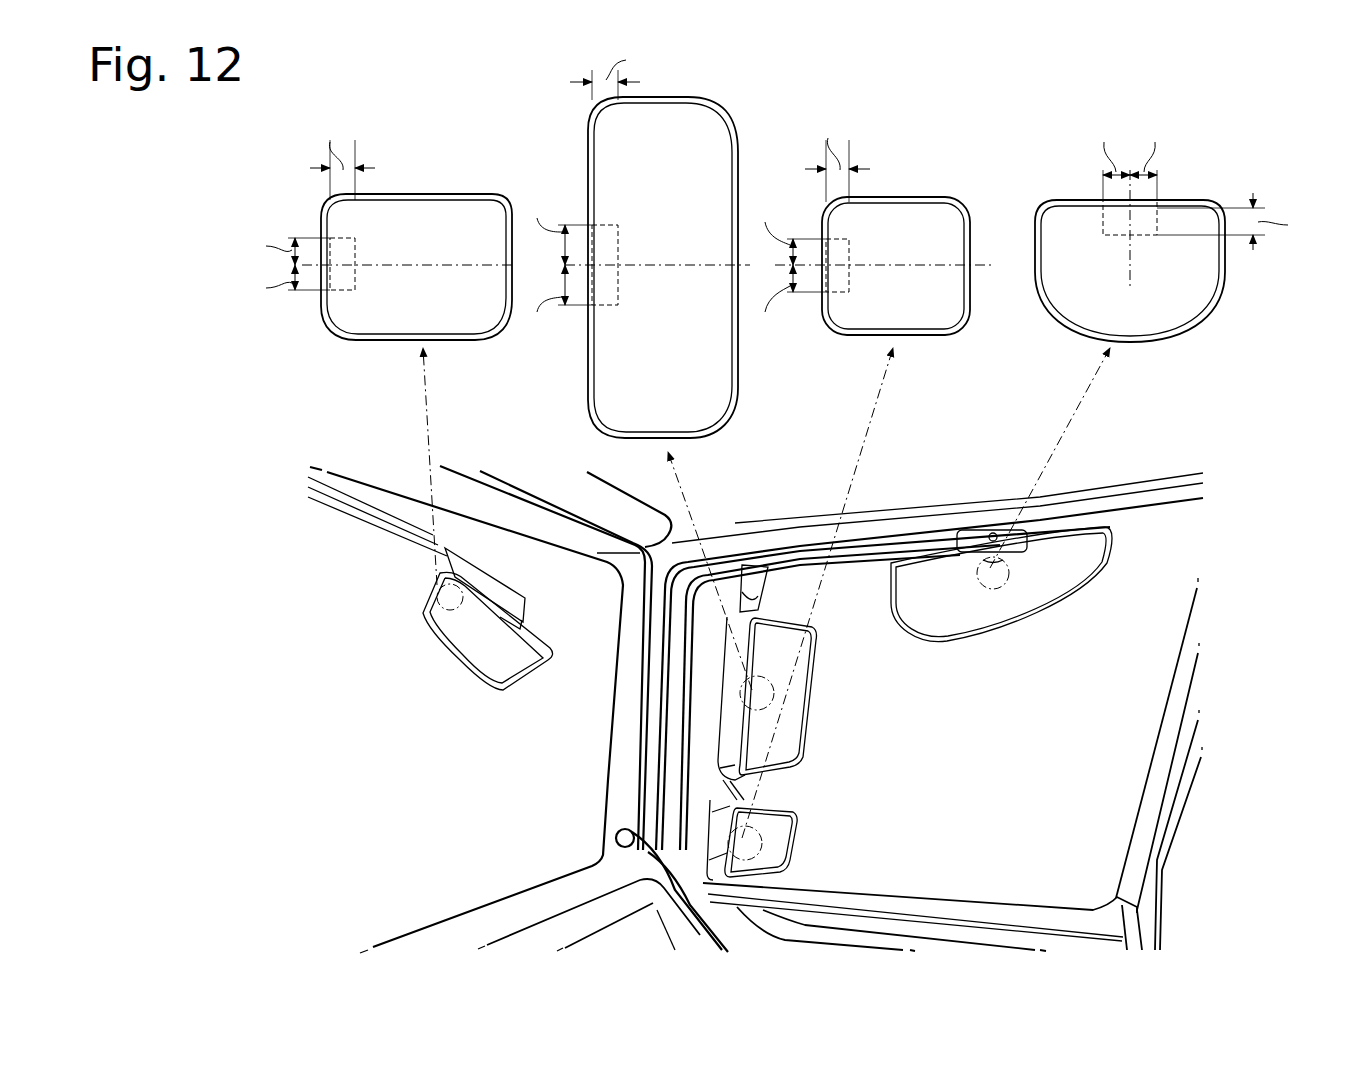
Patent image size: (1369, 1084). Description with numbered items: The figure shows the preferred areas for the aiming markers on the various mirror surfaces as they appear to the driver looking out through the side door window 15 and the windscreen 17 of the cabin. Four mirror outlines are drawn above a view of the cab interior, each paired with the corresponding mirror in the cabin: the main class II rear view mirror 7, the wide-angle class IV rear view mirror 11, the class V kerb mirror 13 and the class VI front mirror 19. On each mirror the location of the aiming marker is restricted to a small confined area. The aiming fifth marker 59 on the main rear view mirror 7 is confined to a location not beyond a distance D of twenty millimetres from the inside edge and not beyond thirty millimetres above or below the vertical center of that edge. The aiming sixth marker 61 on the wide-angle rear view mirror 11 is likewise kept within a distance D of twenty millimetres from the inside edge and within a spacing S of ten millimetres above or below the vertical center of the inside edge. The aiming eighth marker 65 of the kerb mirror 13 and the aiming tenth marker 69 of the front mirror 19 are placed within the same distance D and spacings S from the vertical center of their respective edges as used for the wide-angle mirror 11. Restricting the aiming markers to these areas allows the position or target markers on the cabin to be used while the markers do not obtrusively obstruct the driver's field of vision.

The main (class II) rear view mirror 7 is at (712, 100).
The wide-angle (class IV) rear view mirror 11 is at (930, 197).
The class V kerb mirror 13 is at (1202, 318).
The side door window 15 is at (1033, 787).
The windscreen 17 is at (482, 817).
The class VI front mirror 19 is at (443, 195).
The aiming fifth marker 59 is at (752, 693).
The aiming sixth marker 61 is at (740, 843).
The aiming eighth marker 65 is at (999, 571).
The aiming tenth marker 69 is at (440, 597).